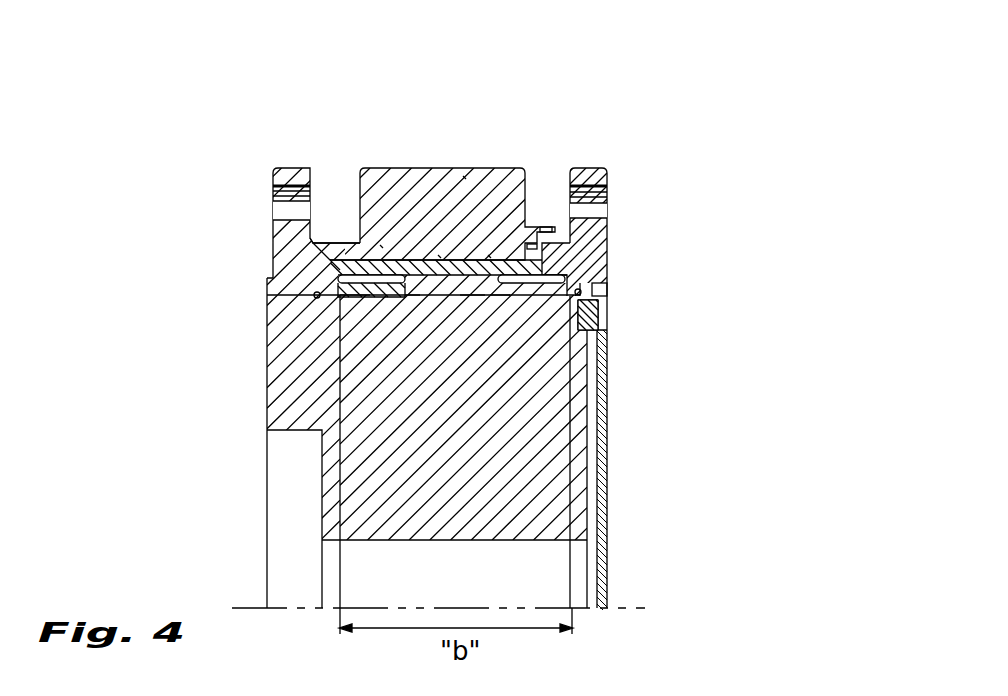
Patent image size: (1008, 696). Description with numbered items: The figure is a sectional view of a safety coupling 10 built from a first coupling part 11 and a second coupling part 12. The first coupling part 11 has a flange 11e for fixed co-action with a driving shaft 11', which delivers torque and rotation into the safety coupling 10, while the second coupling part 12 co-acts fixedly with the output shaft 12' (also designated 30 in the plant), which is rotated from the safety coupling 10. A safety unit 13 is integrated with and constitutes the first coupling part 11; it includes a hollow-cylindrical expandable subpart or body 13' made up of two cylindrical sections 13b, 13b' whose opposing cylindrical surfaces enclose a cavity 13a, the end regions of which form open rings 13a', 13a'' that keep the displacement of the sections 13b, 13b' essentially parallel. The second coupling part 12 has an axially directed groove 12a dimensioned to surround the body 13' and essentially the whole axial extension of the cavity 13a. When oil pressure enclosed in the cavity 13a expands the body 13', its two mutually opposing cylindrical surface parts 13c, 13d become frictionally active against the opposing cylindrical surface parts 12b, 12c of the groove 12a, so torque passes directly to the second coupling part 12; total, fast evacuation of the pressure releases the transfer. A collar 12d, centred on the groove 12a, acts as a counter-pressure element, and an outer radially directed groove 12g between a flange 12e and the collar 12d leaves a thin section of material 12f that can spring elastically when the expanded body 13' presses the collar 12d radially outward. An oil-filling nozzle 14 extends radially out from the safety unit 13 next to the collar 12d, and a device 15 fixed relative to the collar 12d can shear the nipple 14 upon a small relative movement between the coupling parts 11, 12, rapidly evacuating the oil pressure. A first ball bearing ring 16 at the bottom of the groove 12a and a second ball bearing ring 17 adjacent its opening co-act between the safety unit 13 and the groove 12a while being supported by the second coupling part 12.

The safety coupling 10 is at (395, 160).
The first coupling part 11 is at (646, 389).
The flange 11e is at (606, 170).
The shaft 11' is at (637, 350).
The second coupling part 12 is at (378, 388).
The shaft 12' is at (220, 520).
The shaft 30 is at (265, 486).
The axially directed groove 12a is at (440, 258).
The cylindrical surface part of the groove 12b is at (383, 247).
The cylindrical surface part of the groove 12c is at (357, 298).
The collar 12d is at (465, 176).
The flange 12e is at (284, 172).
The thin section of material 12f is at (332, 266).
The outer radially directed groove 12g is at (328, 188).
The safety unit 13 is at (526, 237).
The hollow-cylindrical part 13' is at (305, 348).
The cavity 13a is at (326, 359).
The open ring cavity 13a' is at (281, 252).
The open ring cavity 13a'' is at (610, 362).
The cylindrical section 13b is at (577, 415).
The cylindrical section 13b' is at (532, 143).
The cylindrical surface part 13c is at (598, 289).
The cylindrical surface part 13d is at (500, 297).
The oil-filling nozzle 14 is at (546, 228).
The device 15 is at (540, 246).
The first ball bearing ring 16 is at (303, 294).
The second ball bearing ring 17 is at (598, 300).